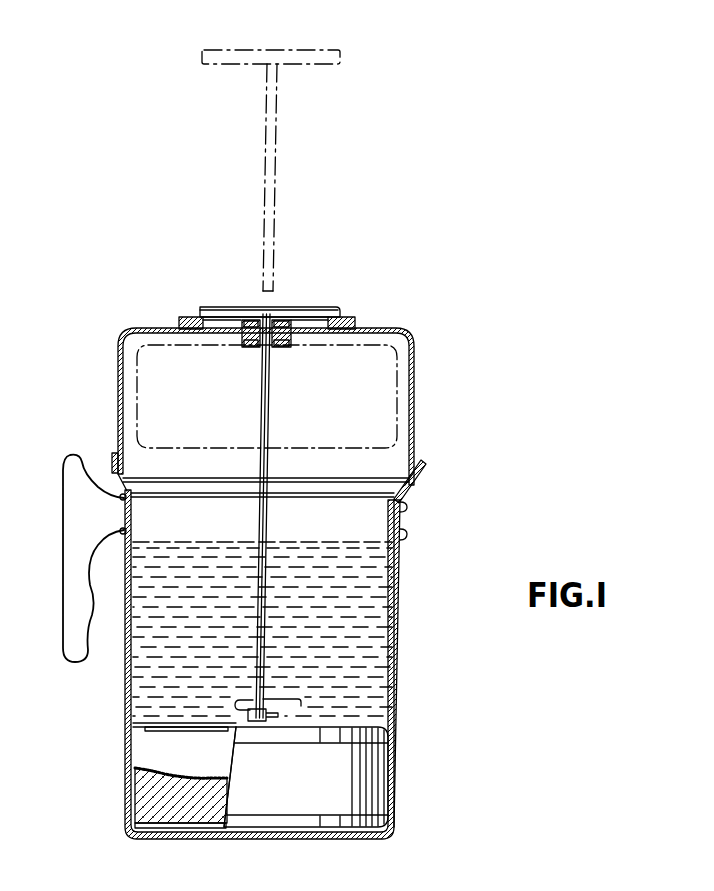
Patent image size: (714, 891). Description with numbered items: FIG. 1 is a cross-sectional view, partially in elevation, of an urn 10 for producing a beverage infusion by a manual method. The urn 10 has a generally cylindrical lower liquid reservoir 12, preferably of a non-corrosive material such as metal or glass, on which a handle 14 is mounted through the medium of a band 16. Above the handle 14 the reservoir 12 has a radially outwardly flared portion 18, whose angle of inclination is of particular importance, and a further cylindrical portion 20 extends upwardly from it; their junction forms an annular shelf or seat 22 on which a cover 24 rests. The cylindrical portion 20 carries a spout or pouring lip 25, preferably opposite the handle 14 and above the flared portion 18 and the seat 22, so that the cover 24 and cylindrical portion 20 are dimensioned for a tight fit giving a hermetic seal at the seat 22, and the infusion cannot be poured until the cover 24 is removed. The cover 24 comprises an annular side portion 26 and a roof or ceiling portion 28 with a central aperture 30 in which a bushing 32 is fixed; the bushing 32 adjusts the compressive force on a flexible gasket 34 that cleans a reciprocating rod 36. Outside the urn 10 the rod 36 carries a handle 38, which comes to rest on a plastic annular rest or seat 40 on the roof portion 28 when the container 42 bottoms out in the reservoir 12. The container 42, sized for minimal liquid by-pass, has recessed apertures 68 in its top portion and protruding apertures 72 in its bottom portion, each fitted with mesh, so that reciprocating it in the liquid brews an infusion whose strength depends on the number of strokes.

The urn 10 is at (410, 676).
The lower liquid reservoir 12 is at (398, 630).
The handle 14 is at (72, 664).
The band 16 is at (406, 526).
The radially outwardly flared portion 18 is at (406, 502).
The cylindrical portion 20 is at (116, 468).
The annular shelf or seat 22 is at (406, 488).
The cover 24 is at (292, 392).
The spout or pouring lip 25 is at (424, 462).
The side portion 26 is at (415, 402).
The roof or ceiling portion 28 is at (389, 333).
The aperture 30 is at (244, 344).
The bushing 32 is at (283, 347).
The flexible gasket 34 is at (279, 321).
The rod 36 is at (266, 530).
The handle 38 is at (343, 58).
The annular rest or seat 40 is at (351, 320).
The container 42 is at (135, 395).
The recessed apertures 68 is at (160, 730).
The protruding apertures 72 is at (150, 836).